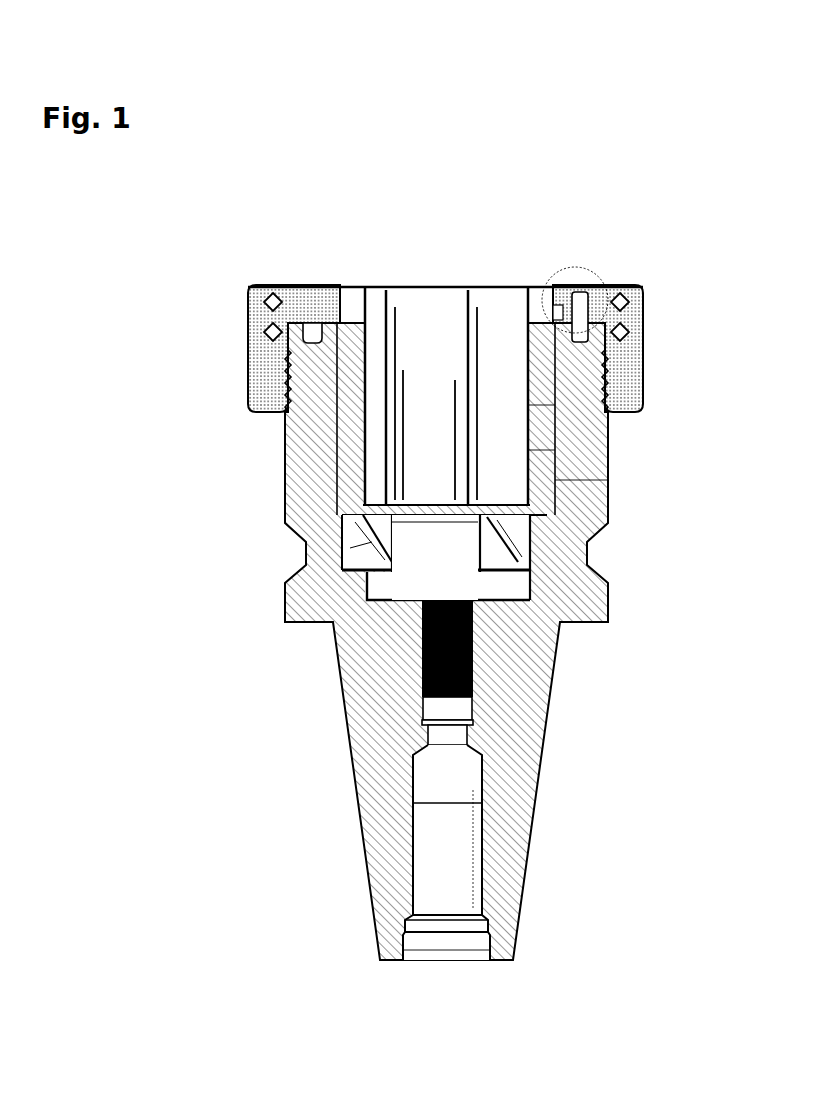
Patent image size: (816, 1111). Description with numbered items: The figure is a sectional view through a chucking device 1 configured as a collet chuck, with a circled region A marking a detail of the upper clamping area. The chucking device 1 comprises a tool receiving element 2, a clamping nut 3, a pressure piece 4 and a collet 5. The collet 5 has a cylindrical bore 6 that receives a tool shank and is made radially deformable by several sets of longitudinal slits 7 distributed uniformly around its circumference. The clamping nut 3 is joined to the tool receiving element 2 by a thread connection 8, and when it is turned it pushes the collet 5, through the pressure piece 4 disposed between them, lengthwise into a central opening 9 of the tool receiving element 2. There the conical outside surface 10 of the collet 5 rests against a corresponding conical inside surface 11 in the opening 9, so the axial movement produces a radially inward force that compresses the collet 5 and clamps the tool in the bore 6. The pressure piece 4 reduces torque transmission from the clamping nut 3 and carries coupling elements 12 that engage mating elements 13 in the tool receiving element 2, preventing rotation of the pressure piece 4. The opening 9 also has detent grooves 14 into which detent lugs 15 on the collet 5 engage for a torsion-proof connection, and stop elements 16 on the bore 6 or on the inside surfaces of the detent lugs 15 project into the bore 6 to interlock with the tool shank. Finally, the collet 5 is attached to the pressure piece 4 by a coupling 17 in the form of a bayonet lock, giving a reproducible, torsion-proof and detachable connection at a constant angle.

The chucking device 1 is at (262, 140).
The tool receiving element 2 is at (370, 737).
The clamping nut 3 is at (263, 370).
The pressure piece 4 is at (311, 297).
The collet 5 is at (350, 457).
The cylindrical bore 6 is at (558, 493).
The longitudinal slits 7 is at (455, 320).
The thread connection 8 is at (285, 378).
The central opening 9 is at (463, 578).
The conical outside surface 10 is at (557, 457).
The conical inside surface 11 is at (548, 418).
The coupling elements 12 is at (573, 300).
The mating elements 13 is at (614, 373).
The detent grooves 14 is at (372, 578).
The detent lugs 15 is at (368, 548).
The stop elements 16 is at (320, 562).
The coupling 17 is at (341, 298).
The detail region A is at (600, 275).